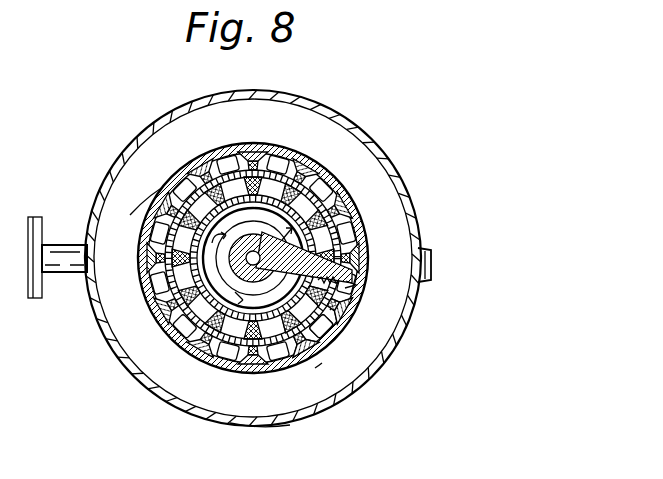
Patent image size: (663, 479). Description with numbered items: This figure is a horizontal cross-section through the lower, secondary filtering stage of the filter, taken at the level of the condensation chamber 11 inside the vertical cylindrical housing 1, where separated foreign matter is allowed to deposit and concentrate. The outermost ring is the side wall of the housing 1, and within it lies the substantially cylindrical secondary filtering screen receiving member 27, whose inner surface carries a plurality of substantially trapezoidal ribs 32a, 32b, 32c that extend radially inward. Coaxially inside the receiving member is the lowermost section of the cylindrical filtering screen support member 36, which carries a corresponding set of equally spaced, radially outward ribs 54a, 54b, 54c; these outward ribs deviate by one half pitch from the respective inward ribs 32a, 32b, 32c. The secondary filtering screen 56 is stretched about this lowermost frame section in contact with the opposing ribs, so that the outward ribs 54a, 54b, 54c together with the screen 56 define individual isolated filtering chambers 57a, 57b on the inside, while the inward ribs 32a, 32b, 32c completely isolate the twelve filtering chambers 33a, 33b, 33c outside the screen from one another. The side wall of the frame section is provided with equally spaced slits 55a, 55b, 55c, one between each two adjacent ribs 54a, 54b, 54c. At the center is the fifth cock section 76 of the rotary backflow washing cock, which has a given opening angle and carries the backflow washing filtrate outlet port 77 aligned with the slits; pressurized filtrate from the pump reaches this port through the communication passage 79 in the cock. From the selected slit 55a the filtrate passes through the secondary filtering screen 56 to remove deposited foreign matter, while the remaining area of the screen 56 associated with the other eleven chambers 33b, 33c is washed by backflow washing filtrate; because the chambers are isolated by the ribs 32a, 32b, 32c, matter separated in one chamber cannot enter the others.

The housing 1 is at (373, 143).
The condensation chamber 11 is at (298, 404).
The secondary filtering screen receiving member 27 is at (143, 220).
The rib 32a is at (322, 363).
The rib 32b is at (375, 278).
The rib 32c is at (360, 213).
The filtering chamber 33a is at (363, 358).
The filtering chamber 33b is at (432, 263).
The filtering chamber 33c is at (323, 183).
The filtering screen support member 36 is at (228, 175).
The rib 54a is at (338, 335).
The rib 54b is at (372, 285).
The rib 54c is at (340, 175).
The slit 55a is at (332, 355).
The slit 55b is at (348, 296).
The slit 55c is at (302, 152).
The secondary filtering screen 56 is at (163, 205).
The isolated filtering chamber 57a is at (353, 300).
The isolated filtering chamber 57b is at (352, 250).
The fifth cock section 76 is at (188, 205).
The backflow washing filtrate outlet port 77 is at (318, 300).
The communication passage 79 is at (255, 288).